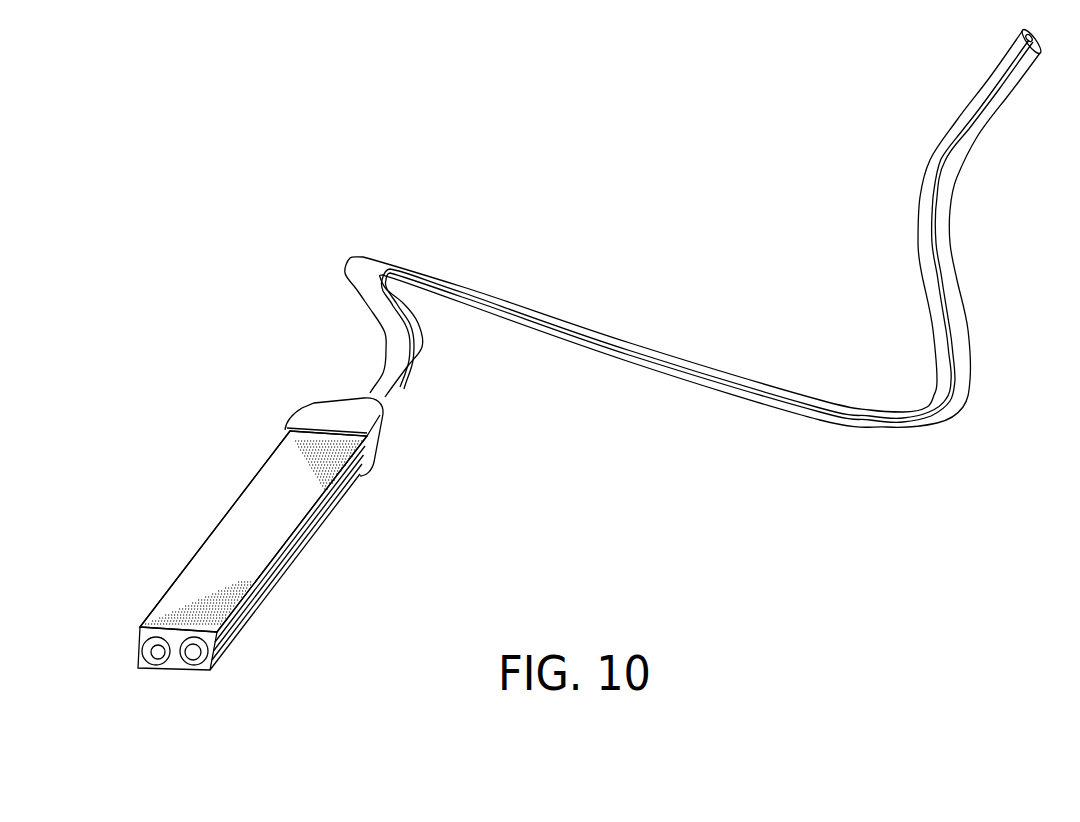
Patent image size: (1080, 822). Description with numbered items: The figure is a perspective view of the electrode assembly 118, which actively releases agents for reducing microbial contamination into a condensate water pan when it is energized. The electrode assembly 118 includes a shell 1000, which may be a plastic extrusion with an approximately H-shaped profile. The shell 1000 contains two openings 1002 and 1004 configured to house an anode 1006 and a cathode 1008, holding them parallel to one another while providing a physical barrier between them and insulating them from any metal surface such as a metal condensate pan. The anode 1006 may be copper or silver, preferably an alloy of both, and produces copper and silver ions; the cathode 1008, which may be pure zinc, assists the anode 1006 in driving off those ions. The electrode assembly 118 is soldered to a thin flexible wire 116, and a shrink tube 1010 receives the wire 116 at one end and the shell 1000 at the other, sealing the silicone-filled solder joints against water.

The wire 116 is at (917, 178).
The electrode assembly 118 is at (219, 447).
The shell 1000 is at (218, 545).
The opening 1002 is at (153, 663).
The opening 1004 is at (192, 667).
The anode 1006 is at (147, 647).
The cathode 1008 is at (220, 645).
The shrink tube 1010 is at (380, 430).